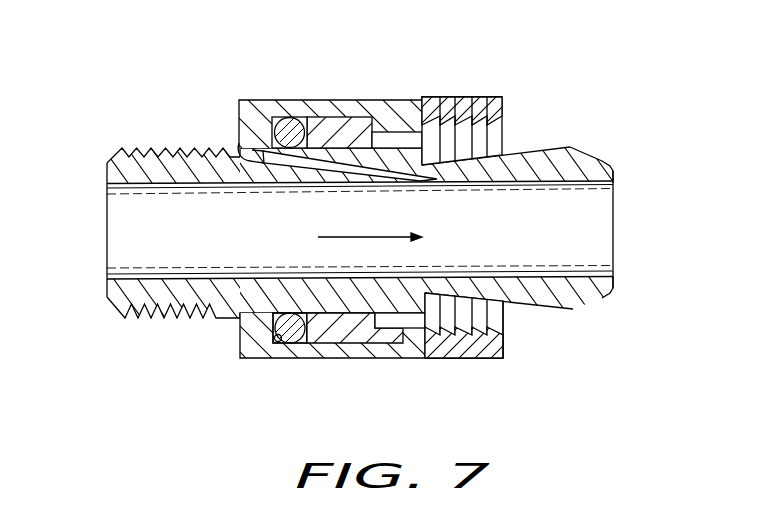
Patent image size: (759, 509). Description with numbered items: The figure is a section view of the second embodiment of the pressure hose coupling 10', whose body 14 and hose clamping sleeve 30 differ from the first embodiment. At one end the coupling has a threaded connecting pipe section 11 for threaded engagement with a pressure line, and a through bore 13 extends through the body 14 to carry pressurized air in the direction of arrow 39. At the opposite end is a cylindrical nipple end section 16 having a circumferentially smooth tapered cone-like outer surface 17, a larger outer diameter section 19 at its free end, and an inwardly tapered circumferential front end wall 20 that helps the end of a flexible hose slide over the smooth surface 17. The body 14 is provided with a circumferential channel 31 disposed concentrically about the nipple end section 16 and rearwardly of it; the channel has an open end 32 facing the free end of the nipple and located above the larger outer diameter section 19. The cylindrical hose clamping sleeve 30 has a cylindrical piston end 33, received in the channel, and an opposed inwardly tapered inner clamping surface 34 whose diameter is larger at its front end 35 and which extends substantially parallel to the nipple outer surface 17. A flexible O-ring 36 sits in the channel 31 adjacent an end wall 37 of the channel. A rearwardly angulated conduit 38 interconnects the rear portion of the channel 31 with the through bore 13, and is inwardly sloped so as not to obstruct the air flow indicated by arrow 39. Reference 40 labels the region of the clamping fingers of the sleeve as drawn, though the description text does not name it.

The pressure hose coupling 10' is at (365, 166).
The threaded connecting pipe section 11 is at (164, 319).
The through bore 13 is at (150, 233).
The body 14 is at (241, 92).
The cylindrical nipple end section 16 is at (577, 139).
The smooth tapered cone-like outer surface 17 is at (528, 145).
The larger outer diameter section 19 is at (574, 310).
The inwardly tapered circumferential front end wall 20 is at (601, 153).
The cylindrical hose clamping sleeve 30 is at (467, 368).
The circumferential channel 31 is at (327, 122).
The open end 32 is at (390, 333).
The cylindrical piston end 33 is at (332, 330).
The inwardly tapered inner clamping surface 34 is at (494, 344).
The front end 35 is at (504, 315).
The flexible O-ring 36 is at (292, 340).
The end wall 37 is at (278, 340).
The rearwardly angulated conduit 38 is at (249, 152).
The arrow 39 is at (376, 237).
The gripping fingers 40 is at (470, 112).